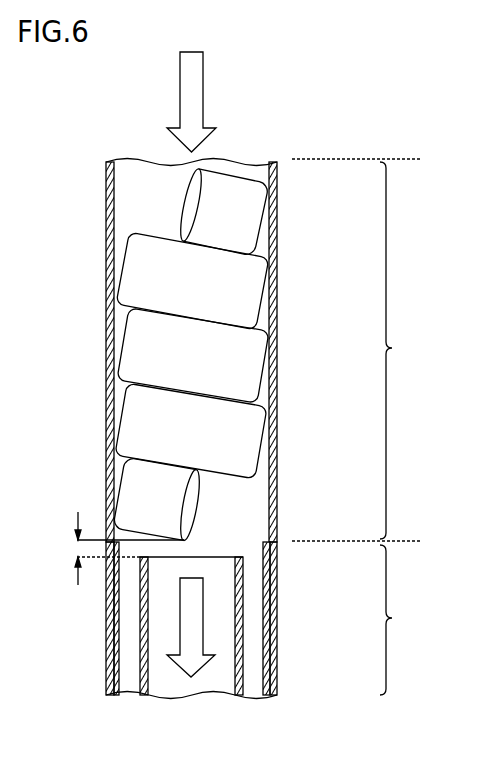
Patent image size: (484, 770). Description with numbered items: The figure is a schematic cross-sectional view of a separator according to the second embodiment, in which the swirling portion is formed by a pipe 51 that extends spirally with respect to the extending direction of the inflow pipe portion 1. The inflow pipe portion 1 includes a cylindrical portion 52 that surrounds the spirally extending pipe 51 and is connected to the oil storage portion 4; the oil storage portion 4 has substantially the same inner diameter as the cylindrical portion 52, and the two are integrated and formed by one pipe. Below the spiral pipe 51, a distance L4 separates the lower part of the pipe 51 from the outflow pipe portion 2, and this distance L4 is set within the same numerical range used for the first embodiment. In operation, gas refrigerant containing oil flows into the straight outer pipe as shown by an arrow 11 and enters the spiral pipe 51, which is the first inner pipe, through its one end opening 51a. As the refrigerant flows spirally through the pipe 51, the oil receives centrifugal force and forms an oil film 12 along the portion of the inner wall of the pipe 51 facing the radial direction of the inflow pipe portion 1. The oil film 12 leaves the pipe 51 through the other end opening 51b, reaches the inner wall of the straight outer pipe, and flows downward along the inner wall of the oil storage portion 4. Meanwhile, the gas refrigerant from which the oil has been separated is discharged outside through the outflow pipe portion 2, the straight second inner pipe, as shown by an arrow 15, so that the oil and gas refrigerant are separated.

The inflow pipe portion 1 is at (356, 349).
The outflow pipe portion 2 is at (140, 673).
The oil storage portion 4 is at (356, 618).
The arrow 11 is at (203, 72).
The oil film 12 is at (265, 673).
The arrow 15 is at (203, 595).
The pipe 51 is at (242, 293).
The one end opening 51a is at (185, 211).
The other end opening 51b is at (195, 507).
The cylindrical portion 52 is at (276, 376).
The distance L4 is at (113, 548).